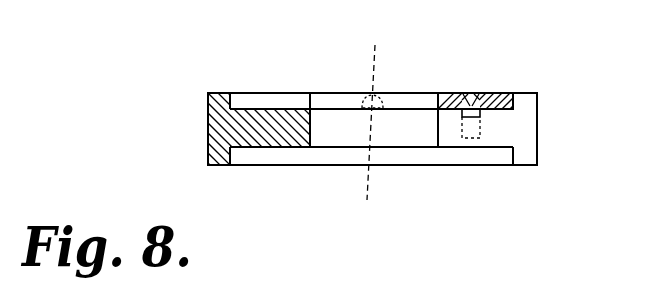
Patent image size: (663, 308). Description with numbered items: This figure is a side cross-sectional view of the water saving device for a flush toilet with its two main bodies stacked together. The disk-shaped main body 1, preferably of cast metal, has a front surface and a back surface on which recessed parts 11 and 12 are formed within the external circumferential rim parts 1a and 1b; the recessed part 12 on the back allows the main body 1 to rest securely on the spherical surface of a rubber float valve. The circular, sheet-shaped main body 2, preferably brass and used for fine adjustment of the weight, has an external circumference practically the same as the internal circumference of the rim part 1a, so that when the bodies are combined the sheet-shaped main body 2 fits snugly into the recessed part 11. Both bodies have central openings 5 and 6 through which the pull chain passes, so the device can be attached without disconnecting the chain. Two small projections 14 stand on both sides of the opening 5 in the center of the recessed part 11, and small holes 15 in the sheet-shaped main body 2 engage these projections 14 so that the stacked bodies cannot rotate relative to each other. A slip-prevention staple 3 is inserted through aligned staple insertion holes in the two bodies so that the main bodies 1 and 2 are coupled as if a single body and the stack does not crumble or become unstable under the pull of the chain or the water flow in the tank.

The main body 1 is at (541, 128).
The external circumferential rim part 1a is at (530, 92).
The external circumferential rim part 1b is at (527, 166).
The sheet-shaped main body 2 is at (447, 88).
The slip-prevention staple 3 is at (470, 91).
The opening 5 is at (308, 102).
The opening 6 is at (311, 129).
The recessed part 11 is at (262, 101).
The recessed part 12 is at (413, 150).
The small projection 14 is at (362, 139).
The small hole 15 is at (378, 62).